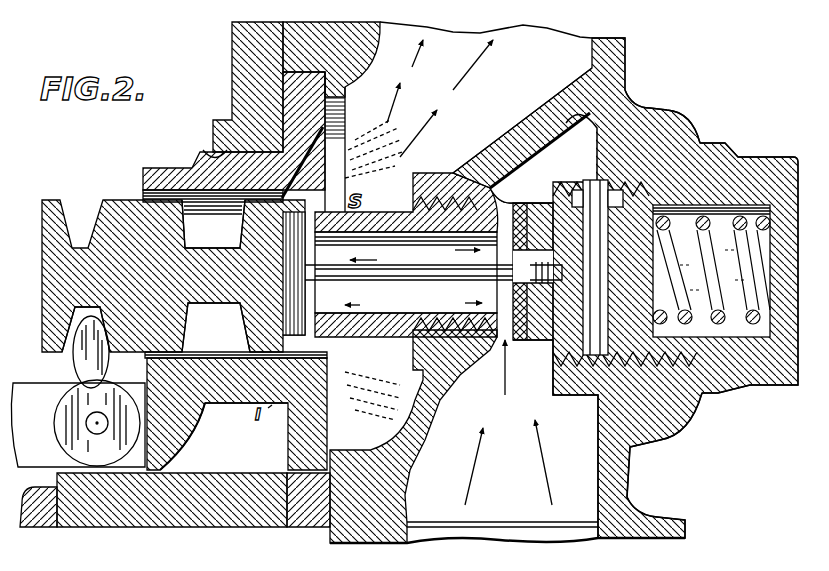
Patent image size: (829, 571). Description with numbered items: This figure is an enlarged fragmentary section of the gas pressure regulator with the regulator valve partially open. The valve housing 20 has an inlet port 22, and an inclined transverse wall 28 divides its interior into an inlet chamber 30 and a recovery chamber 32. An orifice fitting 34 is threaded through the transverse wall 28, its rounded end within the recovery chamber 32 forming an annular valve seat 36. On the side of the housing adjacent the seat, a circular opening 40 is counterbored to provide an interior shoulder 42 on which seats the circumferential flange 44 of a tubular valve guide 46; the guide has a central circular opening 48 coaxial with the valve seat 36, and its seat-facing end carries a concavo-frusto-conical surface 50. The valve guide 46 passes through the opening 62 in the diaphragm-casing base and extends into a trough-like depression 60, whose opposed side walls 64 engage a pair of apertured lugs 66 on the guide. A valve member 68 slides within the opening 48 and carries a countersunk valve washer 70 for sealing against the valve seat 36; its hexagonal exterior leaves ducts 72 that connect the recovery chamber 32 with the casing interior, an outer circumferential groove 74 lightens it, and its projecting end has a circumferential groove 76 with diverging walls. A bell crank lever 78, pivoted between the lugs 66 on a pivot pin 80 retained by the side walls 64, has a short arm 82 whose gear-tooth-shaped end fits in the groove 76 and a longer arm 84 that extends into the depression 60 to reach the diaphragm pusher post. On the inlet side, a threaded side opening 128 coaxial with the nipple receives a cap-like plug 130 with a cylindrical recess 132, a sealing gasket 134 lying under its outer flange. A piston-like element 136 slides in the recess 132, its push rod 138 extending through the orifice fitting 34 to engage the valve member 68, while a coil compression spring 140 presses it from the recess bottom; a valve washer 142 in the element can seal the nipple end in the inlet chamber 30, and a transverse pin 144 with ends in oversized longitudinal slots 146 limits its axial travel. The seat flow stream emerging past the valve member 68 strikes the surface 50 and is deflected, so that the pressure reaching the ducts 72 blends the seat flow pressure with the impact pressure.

The valve housing 20 is at (690, 110).
The inlet port 22 is at (532, 522).
The transverse wall 28 is at (505, 135).
The inlet chamber 30 is at (583, 478).
The recovery chamber 32 is at (580, 62).
The orifice fitting 34 is at (411, 187).
The annular valve seat 36 is at (318, 250).
The circular opening 40 is at (342, 450).
The interior shoulder 42 is at (283, 94).
The circumferential flange 44 is at (288, 453).
The tubular valve guide 46 is at (185, 166).
The central circular opening 48 is at (202, 352).
The concavo-frusto-conical surface 50 is at (287, 425).
The trough-like depression 60 is at (40, 510).
The opening 62 is at (222, 150).
The opposed side walls 64 is at (225, 462).
The apertured lugs 66 is at (135, 457).
The valve member 68 is at (140, 200).
The valve washer 70 is at (320, 298).
The ducts 72 is at (240, 212).
The outer circumferential groove 74 is at (232, 247).
The circumferential groove 76 is at (72, 215).
The bell crank lever 78 is at (36, 388).
The pivot pin 80 is at (95, 433).
The short arm 82 is at (80, 368).
The longer arm 84 is at (50, 448).
The threaded side opening 128 is at (720, 393).
The cap-like plug 130 is at (787, 388).
The cylindrical recess 132 is at (766, 157).
The sealing gasket 134 is at (700, 143).
The piston-like element 136 is at (545, 340).
The push rod 138 is at (452, 276).
The coil compression spring 140 is at (758, 387).
The valve washer 142 is at (500, 228).
The pin 144 is at (587, 158).
The longitudinal slots 146 is at (577, 187).